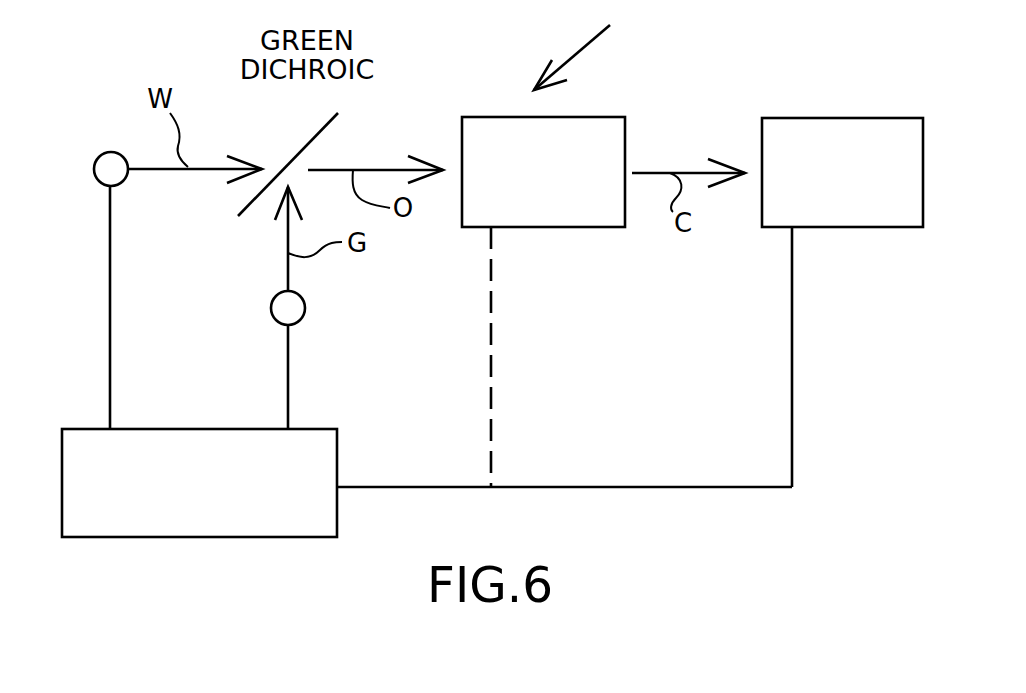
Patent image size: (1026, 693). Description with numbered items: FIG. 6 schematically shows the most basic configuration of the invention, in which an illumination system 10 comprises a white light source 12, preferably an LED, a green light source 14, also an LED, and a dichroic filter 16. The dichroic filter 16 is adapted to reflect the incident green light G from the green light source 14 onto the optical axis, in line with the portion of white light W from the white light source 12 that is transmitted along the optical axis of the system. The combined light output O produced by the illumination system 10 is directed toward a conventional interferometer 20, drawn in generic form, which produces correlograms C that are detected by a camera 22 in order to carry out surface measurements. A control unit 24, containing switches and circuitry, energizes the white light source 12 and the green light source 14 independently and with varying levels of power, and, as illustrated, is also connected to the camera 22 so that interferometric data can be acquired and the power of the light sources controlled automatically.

The illumination system 10 is at (590, 47).
The white light source 12 is at (94, 172).
The green light source 14 is at (305, 308).
The dichroic filter 16 is at (328, 130).
The interferometer 20 is at (547, 198).
The camera 22 is at (848, 195).
The control unit 24 is at (170, 517).